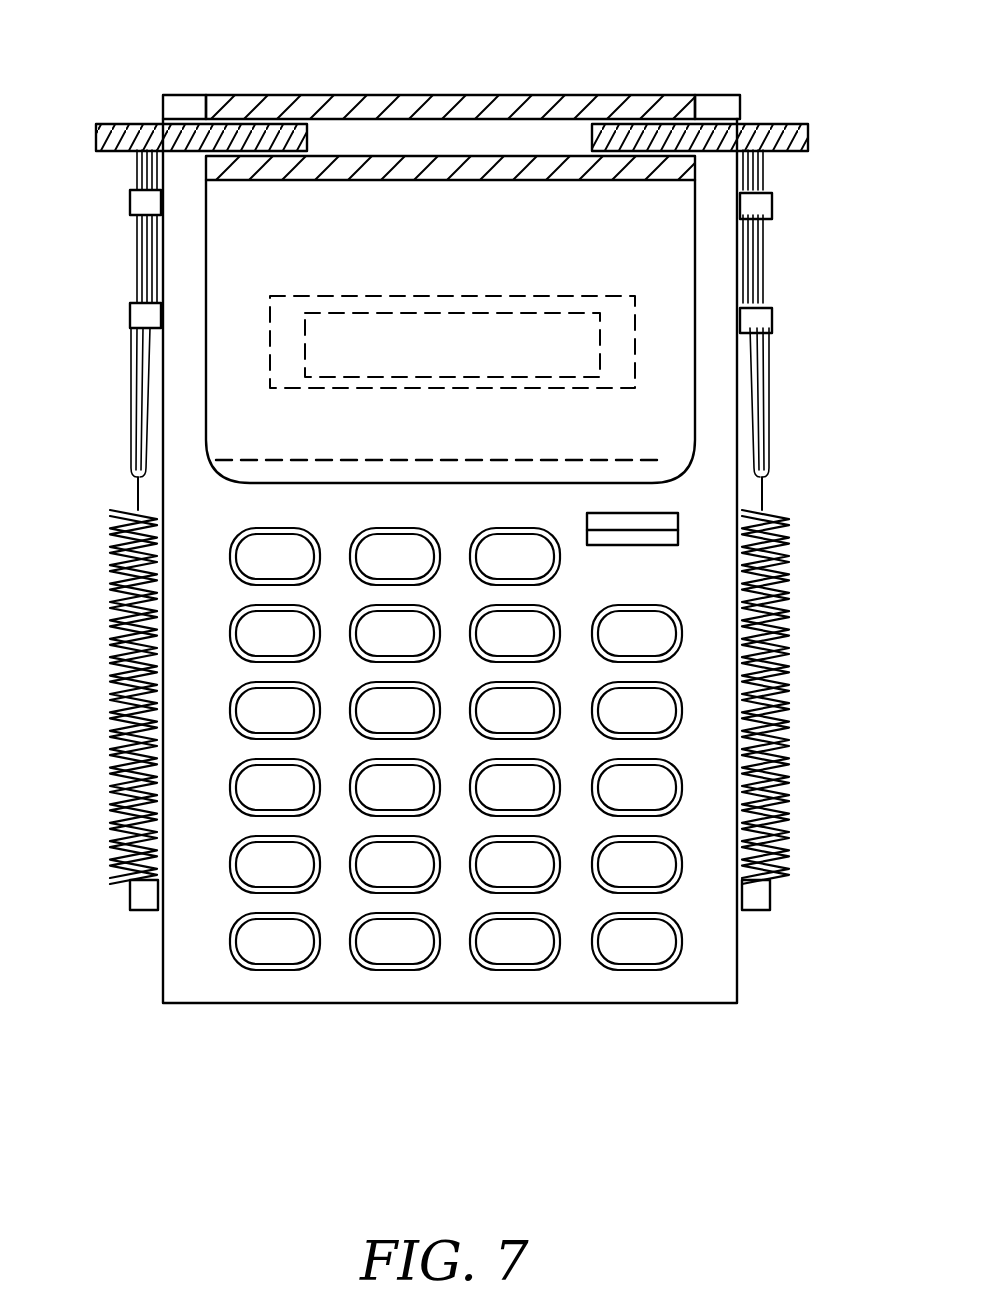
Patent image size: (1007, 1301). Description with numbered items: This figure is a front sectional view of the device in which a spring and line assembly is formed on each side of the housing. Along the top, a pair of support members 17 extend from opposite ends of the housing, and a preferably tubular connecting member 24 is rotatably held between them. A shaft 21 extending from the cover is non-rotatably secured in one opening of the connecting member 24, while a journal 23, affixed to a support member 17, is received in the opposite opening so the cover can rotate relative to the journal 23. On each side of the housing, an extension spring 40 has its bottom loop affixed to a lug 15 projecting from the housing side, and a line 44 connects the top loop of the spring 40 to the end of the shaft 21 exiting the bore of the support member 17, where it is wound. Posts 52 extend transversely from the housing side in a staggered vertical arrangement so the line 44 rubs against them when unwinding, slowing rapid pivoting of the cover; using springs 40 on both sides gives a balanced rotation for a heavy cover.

The lug 15 is at (130, 895).
The support member 17 is at (172, 100).
The shaft 21 is at (96, 137).
The journal 23 is at (273, 128).
The connecting member 24 is at (363, 100).
The spring 40 is at (110, 756).
The line 44 is at (133, 438).
The post 52 is at (130, 318).